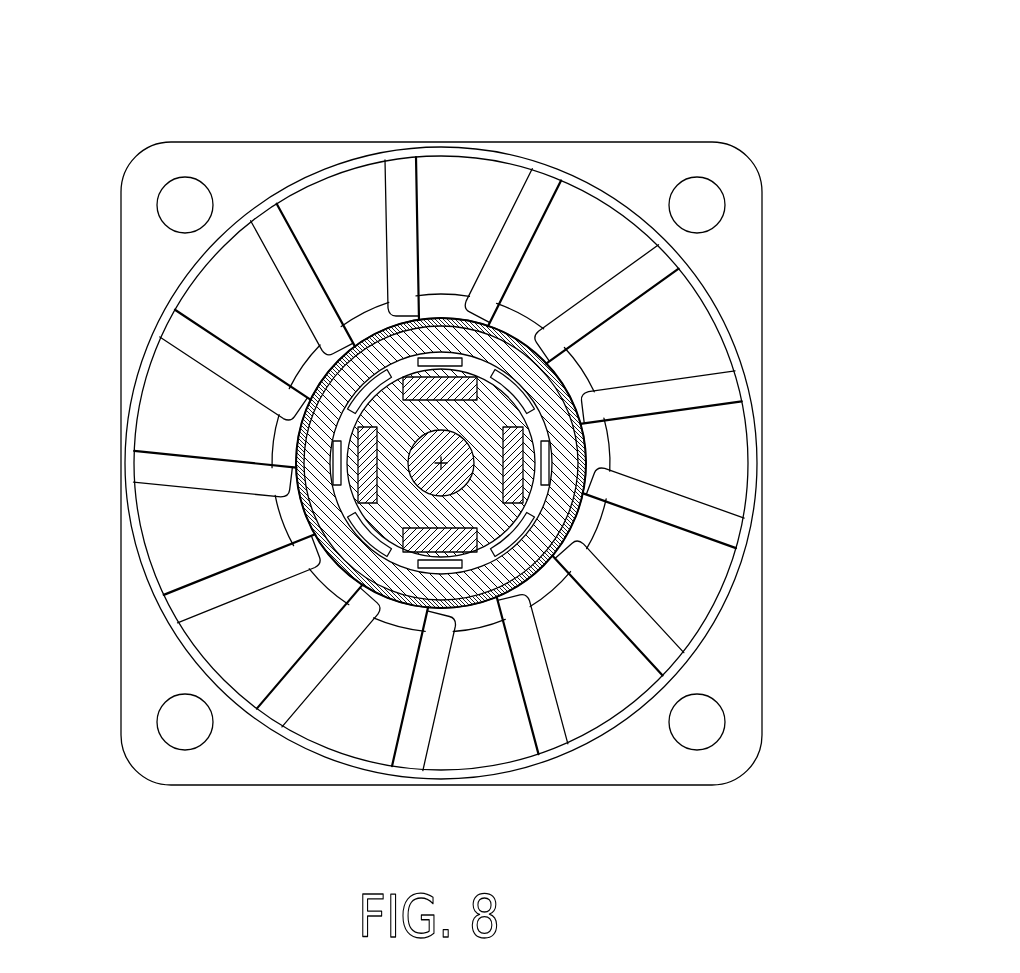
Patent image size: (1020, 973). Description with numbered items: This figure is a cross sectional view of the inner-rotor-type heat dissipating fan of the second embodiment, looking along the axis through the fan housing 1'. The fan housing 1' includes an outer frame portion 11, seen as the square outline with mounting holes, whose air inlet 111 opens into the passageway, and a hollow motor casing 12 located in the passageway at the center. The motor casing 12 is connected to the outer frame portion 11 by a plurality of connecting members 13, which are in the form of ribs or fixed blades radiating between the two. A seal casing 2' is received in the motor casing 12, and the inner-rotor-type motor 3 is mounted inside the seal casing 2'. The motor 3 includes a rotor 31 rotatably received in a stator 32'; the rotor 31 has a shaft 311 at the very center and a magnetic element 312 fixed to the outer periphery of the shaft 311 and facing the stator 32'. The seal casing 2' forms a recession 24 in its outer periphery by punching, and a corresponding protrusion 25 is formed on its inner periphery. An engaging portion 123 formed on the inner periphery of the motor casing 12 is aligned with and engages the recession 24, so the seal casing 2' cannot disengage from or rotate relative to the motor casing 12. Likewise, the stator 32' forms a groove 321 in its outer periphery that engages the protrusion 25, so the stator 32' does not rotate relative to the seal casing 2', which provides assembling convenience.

The fan housing 1' is at (463, 394).
The outer frame portion 11 is at (633, 142).
The air inlet 111 is at (334, 195).
The motor casing 12 is at (272, 443).
The engaging portion 123 is at (132, 443).
The connecting members 13 is at (398, 180).
The seal casing 2' is at (403, 413).
The recession 24 is at (297, 462).
The protrusion 25 is at (293, 506).
The inner-rotor-type motor 3 is at (862, 268).
The rotor 31 is at (540, 372).
The shaft 311 is at (446, 468).
The magnetic element 312 is at (577, 528).
The stator 32' is at (579, 378).
The groove 321 is at (297, 412).